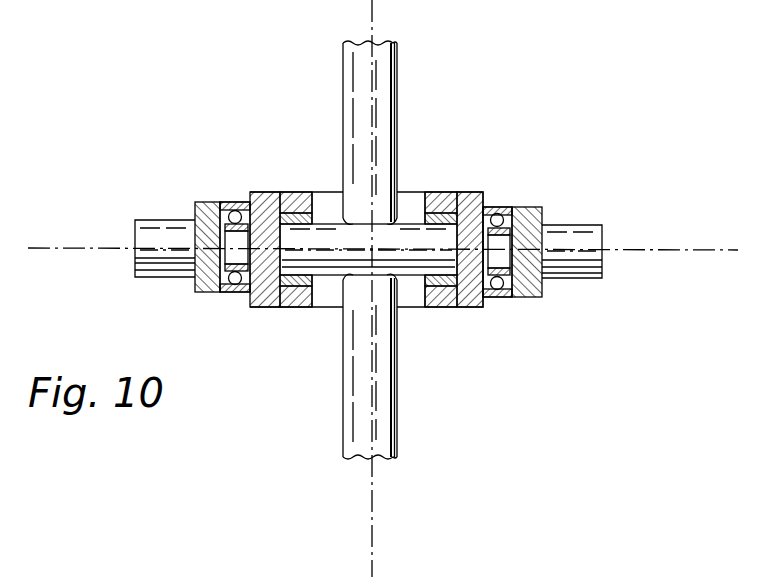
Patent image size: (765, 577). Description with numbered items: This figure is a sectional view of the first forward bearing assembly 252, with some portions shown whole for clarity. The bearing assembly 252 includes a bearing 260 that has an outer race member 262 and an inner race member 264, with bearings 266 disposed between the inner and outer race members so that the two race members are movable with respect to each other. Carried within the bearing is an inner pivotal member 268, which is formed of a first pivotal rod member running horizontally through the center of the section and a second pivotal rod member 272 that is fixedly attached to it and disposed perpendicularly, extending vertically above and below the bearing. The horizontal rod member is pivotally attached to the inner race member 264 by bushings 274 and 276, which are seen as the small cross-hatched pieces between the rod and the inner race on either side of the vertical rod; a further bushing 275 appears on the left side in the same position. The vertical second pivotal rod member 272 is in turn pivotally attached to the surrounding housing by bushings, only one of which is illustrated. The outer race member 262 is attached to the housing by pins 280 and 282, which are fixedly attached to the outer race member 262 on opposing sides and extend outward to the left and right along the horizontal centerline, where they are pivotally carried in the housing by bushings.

The first forward bearing assembly 252 is at (410, 192).
The bearing 260 is at (250, 192).
The outer race member 262 is at (207, 292).
The inner race member 264 is at (272, 307).
The bearings 266 is at (236, 295).
The inner pivotal member 268 is at (341, 131).
The second pivotal rod member 272 is at (397, 108).
The bushing 274 is at (410, 262).
The bushing 275 is at (300, 300).
The bushing 276 is at (453, 303).
The pin 280 is at (155, 222).
The pin 282 is at (565, 228).